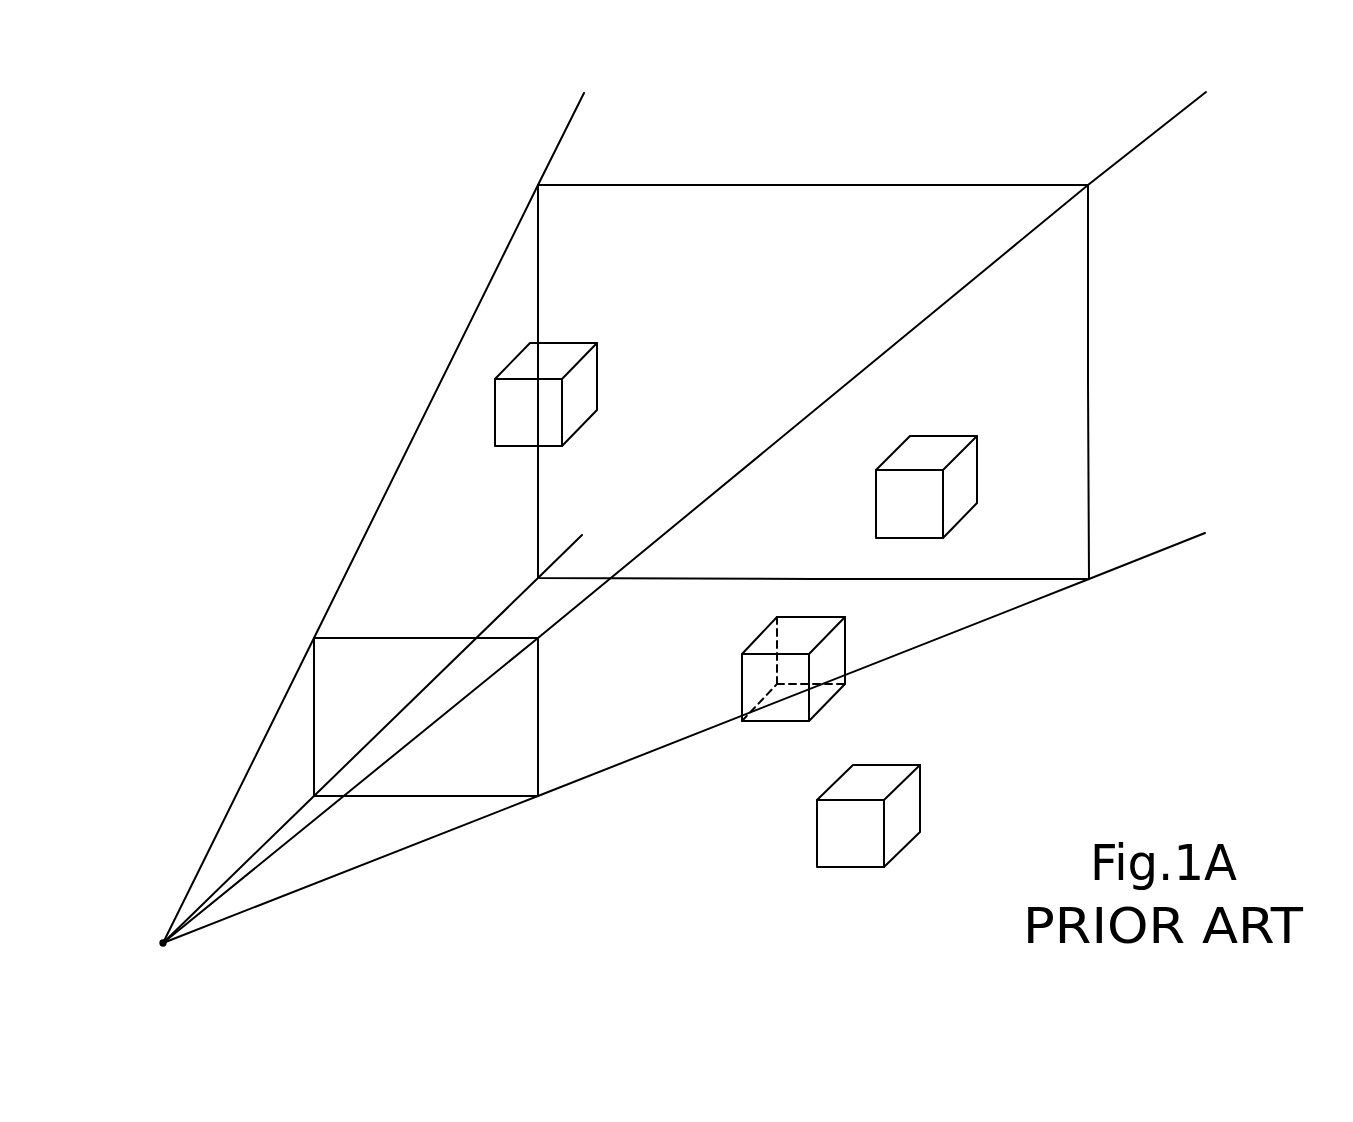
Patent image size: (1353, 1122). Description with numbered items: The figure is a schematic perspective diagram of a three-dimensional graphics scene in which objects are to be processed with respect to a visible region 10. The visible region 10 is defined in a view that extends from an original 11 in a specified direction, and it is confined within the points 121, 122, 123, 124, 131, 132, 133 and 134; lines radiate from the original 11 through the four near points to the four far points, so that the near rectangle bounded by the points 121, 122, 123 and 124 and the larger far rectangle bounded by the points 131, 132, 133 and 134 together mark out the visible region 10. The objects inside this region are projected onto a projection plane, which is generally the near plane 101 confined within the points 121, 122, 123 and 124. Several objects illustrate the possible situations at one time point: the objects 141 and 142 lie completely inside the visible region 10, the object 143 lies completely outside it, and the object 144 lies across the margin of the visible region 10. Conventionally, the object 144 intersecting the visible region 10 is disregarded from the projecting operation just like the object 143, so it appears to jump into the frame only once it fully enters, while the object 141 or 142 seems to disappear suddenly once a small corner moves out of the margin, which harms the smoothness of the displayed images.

The visible region 10 is at (480, 503).
The original 11 is at (162, 940).
The near plane 101 is at (518, 710).
The point 121 is at (314, 638).
The point 122 is at (540, 638).
The point 123 is at (540, 797).
The point 124 is at (314, 795).
The point 131 is at (537, 183).
The point 132 is at (1088, 185).
The point 133 is at (1089, 579).
The point 134 is at (537, 577).
The object 141 is at (585, 383).
The object 142 is at (965, 478).
The object 143 is at (907, 802).
The object 144 is at (818, 693).